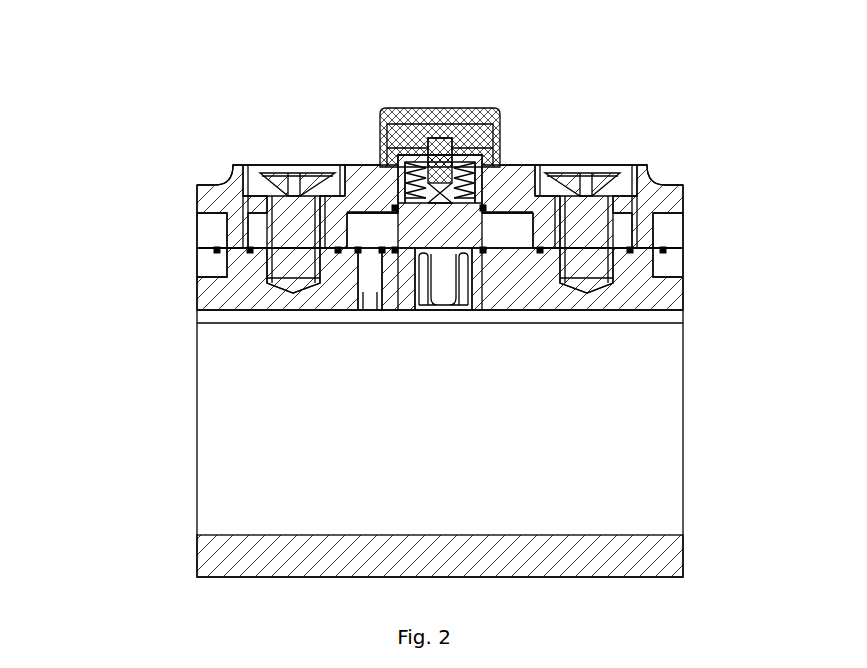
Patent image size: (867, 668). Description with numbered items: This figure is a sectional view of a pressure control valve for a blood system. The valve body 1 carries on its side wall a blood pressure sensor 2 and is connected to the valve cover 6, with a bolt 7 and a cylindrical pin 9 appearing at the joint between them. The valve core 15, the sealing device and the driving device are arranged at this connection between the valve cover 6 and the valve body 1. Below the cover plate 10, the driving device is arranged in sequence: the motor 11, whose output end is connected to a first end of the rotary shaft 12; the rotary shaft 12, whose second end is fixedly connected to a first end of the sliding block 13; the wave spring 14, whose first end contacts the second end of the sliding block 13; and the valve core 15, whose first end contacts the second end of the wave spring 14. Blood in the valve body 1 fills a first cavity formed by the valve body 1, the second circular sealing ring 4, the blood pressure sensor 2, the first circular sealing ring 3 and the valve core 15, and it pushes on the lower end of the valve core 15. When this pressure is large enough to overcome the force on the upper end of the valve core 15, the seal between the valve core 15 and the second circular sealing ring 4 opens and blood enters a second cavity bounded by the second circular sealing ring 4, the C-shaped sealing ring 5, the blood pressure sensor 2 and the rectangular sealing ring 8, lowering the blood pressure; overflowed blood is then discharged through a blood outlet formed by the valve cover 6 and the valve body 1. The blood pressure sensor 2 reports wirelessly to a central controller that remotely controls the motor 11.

The valve body 1 is at (217, 560).
The blood pressure sensor 2 is at (375, 304).
The first circular sealing ring 3 is at (320, 301).
The second circular sealing ring 4 is at (339, 170).
The C-shaped sealing ring 5 is at (200, 250).
The valve cover 6 is at (222, 198).
The bolt 7 is at (242, 168).
The rectangular sealing ring 8 is at (282, 165).
The cylindrical pin 9 is at (380, 165).
The cover plate 10 is at (384, 113).
The motor 11 is at (432, 135).
The rotary shaft 12 is at (462, 150).
The sliding block 13 is at (480, 136).
The wave spring 14 is at (502, 164).
The valve core 15 is at (445, 302).